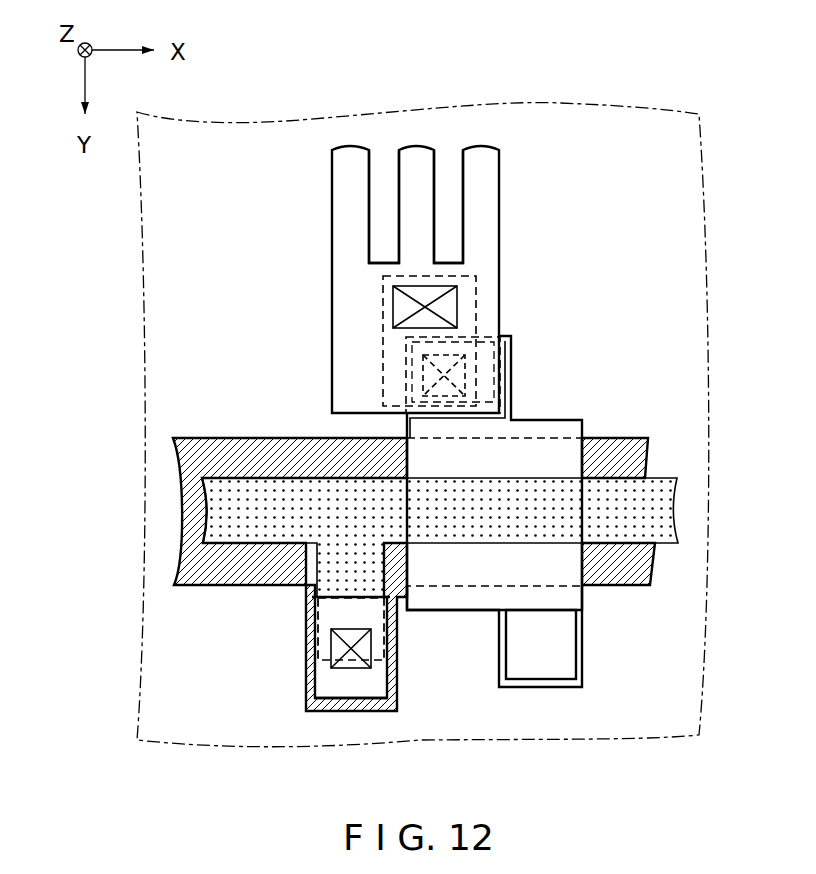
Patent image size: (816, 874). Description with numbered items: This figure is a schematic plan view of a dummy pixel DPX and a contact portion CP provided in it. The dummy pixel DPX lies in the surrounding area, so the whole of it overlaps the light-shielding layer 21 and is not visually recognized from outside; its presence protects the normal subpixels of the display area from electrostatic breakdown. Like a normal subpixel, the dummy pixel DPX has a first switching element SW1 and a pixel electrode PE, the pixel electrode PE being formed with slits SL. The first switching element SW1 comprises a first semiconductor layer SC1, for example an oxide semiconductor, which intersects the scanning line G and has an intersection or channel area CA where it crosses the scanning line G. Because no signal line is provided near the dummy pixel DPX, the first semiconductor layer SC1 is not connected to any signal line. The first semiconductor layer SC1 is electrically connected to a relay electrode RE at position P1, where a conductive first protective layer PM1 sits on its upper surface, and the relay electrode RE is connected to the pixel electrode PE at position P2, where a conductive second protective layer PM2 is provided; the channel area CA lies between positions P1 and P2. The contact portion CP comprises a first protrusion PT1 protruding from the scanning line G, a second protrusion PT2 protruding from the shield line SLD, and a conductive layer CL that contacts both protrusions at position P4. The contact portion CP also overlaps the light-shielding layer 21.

The light-shielding layer 21 is at (282, 120).
The dummy pixel DPX is at (550, 140).
The slit SL is at (447, 150).
The pixel electrode PE is at (500, 202).
The relay electrode RE is at (477, 302).
The position P2 is at (393, 307).
The position P1 is at (423, 373).
The first protective layer PM1 is at (506, 365).
The scanning line G is at (237, 438).
The intersection area (channel area) CA is at (478, 513).
The shield line SLD is at (212, 545).
The first protrusion PT1 is at (303, 588).
The position P4 is at (332, 643).
The first semiconductor layer SC1 is at (460, 611).
The contact portion CP is at (280, 678).
The second protrusion PT2 is at (303, 705).
The conductive layer CL is at (355, 692).
The first switching element SW1 is at (478, 643).
The second protective layer PM2 is at (582, 650).